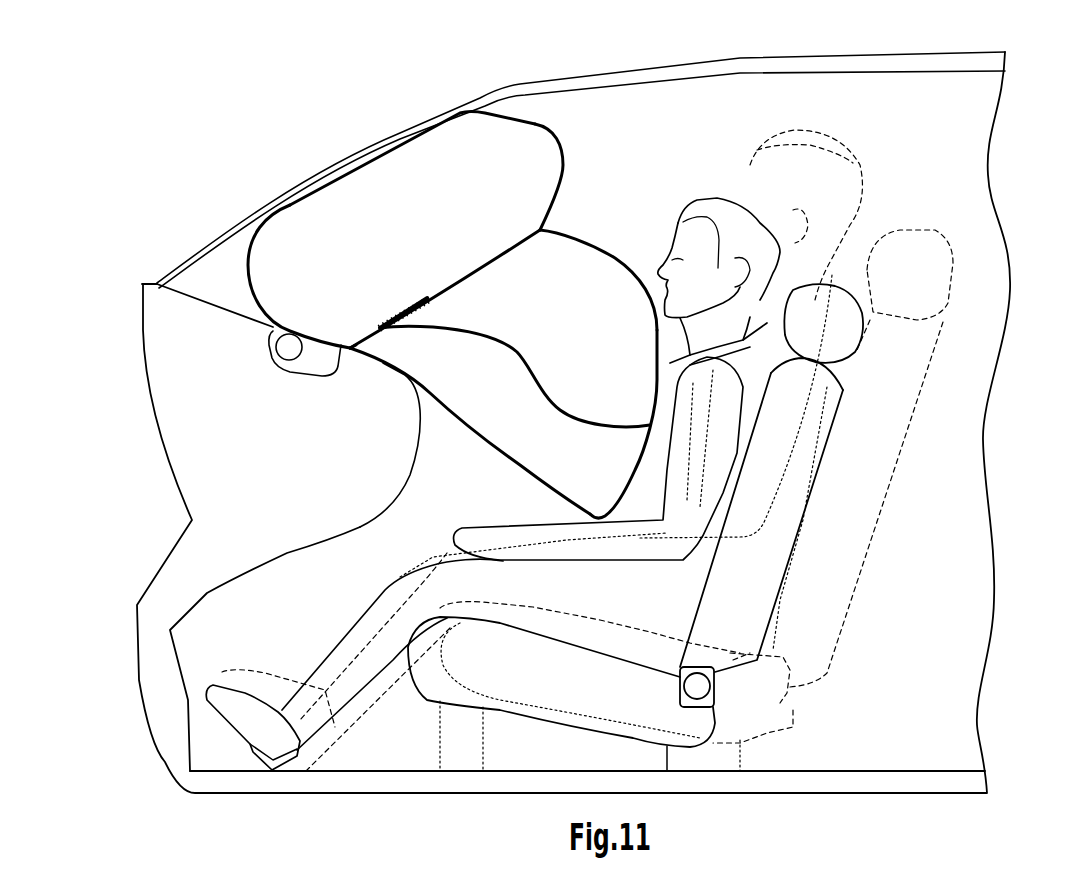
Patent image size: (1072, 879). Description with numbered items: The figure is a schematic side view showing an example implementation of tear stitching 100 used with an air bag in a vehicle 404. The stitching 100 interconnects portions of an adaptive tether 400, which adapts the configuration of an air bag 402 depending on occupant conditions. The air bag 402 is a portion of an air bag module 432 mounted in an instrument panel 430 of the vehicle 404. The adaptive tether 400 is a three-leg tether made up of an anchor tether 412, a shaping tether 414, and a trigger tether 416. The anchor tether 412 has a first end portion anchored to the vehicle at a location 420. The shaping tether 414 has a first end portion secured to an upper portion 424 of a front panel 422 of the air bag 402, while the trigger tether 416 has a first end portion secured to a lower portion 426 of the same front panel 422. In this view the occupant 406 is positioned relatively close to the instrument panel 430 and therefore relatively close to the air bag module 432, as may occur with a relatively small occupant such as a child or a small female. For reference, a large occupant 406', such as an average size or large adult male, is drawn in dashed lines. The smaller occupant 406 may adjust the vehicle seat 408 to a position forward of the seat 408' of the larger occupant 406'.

The tear stitching 100 is at (392, 318).
The adaptive tether 400 is at (470, 270).
The air bag 402 is at (413, 167).
The vehicle 404 is at (297, 123).
The occupant 406 is at (519, 438).
The large occupant 406' is at (563, 429).
The vehicle seat 408 is at (683, 515).
The seat of the larger occupant 408' is at (885, 486).
The anchor tether 412 is at (349, 346).
The shaping tether 414 is at (497, 257).
The trigger tether 416 is at (528, 362).
The location 420 is at (351, 349).
The front panel 422 is at (593, 247).
The upper portion 424 is at (566, 180).
The lower portion 426 is at (637, 445).
The instrument panel 430 is at (347, 483).
The air bag module 432 is at (247, 370).